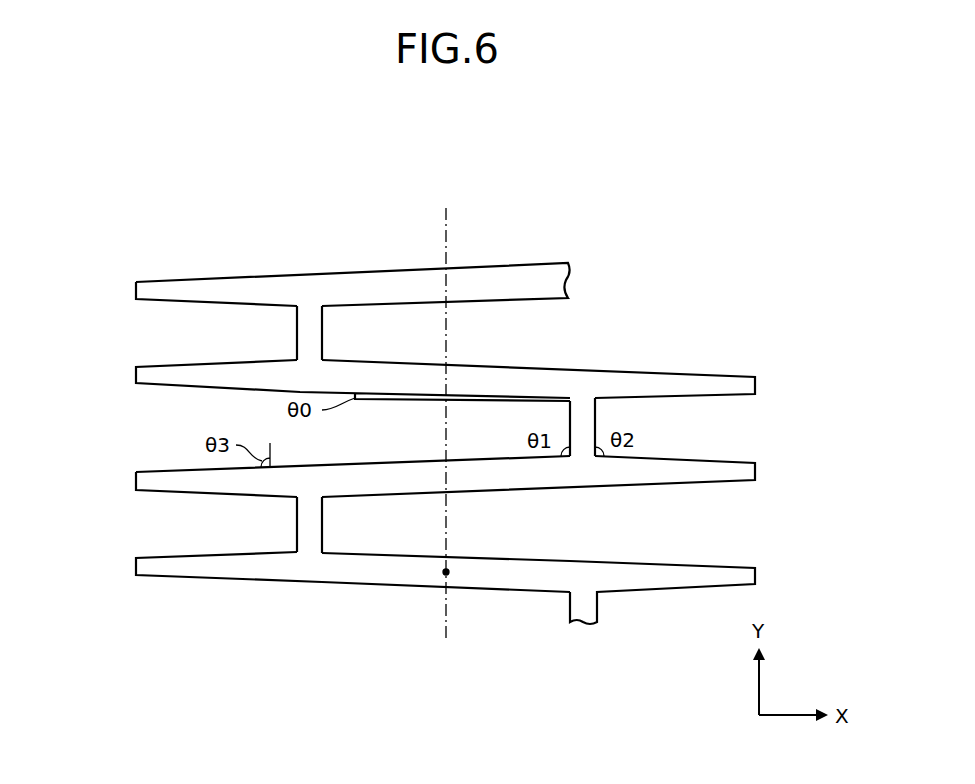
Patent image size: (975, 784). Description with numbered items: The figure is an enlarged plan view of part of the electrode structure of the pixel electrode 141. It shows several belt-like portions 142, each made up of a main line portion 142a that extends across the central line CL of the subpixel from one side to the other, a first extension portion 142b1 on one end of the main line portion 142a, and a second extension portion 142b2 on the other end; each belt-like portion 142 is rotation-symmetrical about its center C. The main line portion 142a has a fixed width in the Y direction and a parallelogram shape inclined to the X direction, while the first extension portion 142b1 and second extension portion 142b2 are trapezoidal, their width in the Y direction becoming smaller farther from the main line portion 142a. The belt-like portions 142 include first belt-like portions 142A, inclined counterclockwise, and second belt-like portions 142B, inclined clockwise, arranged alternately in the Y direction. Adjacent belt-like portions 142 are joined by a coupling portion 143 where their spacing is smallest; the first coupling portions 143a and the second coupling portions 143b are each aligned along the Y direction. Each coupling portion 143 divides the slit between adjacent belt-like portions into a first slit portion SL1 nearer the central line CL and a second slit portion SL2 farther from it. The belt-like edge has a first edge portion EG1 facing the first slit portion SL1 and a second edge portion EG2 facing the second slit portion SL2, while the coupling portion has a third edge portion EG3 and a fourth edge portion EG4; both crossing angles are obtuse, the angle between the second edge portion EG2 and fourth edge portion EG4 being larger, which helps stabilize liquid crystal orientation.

The pixel electrode 141 is at (698, 178).
The belt-like portion 142 is at (405, 492).
The first belt-like portion 142A is at (142, 291).
The second belt-like portion 142B is at (142, 378).
The main line portion 142a is at (421, 573).
The first extension portion 142b1 is at (640, 580).
The second extension portion 142b2 is at (253, 574).
The coupling portion 143 is at (446, 429).
The first coupling portion 143a is at (568, 421).
The second coupling portion 143b is at (322, 328).
The first slit portion SL1 is at (160, 433).
The second slit portion SL2 is at (160, 334).
The first edge portion EG1 is at (232, 389).
The second edge portion EG2 is at (684, 396).
The third edge portion EG3 is at (570, 410).
The fourth edge portion EG4 is at (595, 408).
The central line CL is at (450, 213).
The center C is at (446, 572).